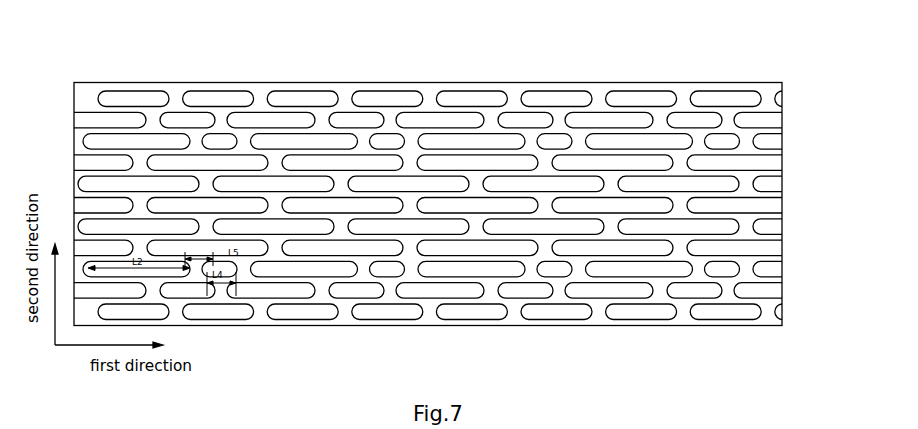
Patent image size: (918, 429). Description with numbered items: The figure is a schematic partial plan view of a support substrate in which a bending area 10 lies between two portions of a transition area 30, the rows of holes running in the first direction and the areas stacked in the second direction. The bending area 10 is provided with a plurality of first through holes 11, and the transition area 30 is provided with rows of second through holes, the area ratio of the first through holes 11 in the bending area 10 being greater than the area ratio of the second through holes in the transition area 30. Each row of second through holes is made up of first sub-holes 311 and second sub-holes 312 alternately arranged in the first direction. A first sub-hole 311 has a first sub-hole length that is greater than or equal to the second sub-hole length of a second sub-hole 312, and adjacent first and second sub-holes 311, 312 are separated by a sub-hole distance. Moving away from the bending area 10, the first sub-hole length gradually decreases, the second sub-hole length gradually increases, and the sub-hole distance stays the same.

The first through holes 11 is at (207, 162).
The first sub-hole 311 is at (318, 144).
The second sub-hole 312 is at (392, 144).
The bending area 10 is at (795, 152).
The transition area 30 is at (795, 70).